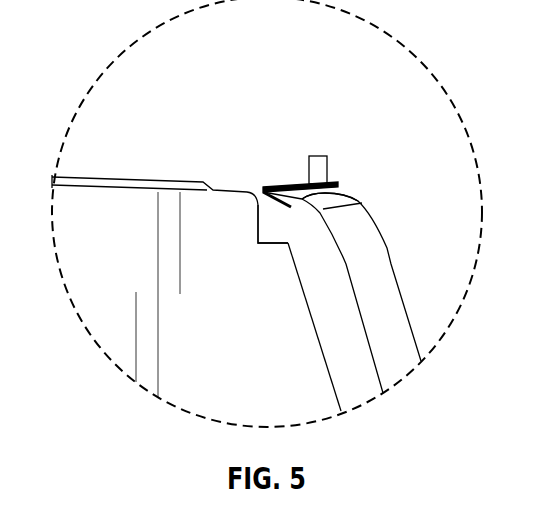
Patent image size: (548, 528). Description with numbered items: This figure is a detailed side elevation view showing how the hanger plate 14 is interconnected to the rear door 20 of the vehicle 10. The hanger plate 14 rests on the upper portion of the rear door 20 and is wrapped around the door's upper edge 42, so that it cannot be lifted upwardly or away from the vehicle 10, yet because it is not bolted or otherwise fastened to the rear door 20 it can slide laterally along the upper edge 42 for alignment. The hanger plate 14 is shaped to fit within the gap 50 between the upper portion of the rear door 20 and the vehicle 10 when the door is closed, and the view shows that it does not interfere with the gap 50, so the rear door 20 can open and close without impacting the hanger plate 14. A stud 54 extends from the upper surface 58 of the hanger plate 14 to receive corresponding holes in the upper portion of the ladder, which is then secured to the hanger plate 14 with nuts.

The vehicle 10 is at (90, 273).
The hanger plate 14 is at (338, 185).
The rear door 20 is at (384, 304).
The upper edge 42 is at (258, 226).
The gap 50 is at (257, 196).
The stud 54 is at (317, 156).
The upper surface 58 is at (288, 185).